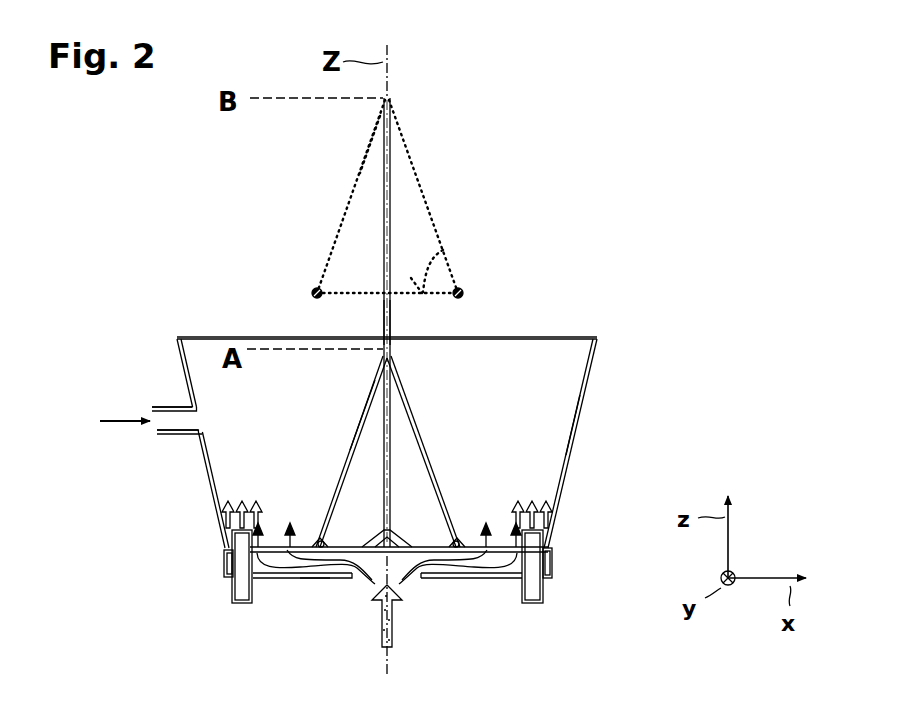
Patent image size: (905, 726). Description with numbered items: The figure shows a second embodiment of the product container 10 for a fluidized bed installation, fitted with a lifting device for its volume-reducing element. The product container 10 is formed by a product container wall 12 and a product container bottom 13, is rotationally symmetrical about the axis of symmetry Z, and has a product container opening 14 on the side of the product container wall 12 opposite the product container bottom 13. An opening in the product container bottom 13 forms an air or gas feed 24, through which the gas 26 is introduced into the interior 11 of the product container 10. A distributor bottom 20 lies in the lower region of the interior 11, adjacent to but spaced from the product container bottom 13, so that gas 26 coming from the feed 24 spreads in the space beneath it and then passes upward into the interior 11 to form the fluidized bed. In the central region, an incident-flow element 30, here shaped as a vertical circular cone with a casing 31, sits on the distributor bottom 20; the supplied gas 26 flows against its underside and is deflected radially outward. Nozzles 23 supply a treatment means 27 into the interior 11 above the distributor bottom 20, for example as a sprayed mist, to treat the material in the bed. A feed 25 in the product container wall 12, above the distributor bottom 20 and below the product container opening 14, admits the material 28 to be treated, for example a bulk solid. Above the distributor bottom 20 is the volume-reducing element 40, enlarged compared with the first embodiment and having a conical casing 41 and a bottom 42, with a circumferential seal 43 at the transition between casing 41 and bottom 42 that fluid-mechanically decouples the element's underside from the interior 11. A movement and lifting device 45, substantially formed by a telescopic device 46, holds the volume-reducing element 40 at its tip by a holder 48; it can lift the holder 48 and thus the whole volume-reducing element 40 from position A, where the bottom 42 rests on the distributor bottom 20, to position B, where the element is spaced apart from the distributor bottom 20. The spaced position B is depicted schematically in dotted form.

The product container 10 is at (624, 184).
The interior 11 is at (560, 390).
The product container wall 12 is at (572, 455).
The product container bottom 13 is at (468, 584).
The product container opening 14 is at (205, 337).
The distributor bottom 20 is at (503, 578).
The nozzles 23 is at (237, 590).
The air or gas feed 24 is at (391, 612).
The feed 25 is at (172, 406).
The gas 26 is at (327, 572).
The treatment means 27 is at (228, 513).
The material 28 is at (117, 414).
The incident-flow element 30 is at (398, 522).
The casing 31 is at (393, 545).
The volume-reducing element 40 is at (418, 161).
The casing 41 is at (428, 200).
The bottom 42 is at (443, 250).
The seal 43 is at (311, 290).
The movement and lifting device 45 is at (399, 324).
The telescopic device 46 is at (383, 322).
The holder 48 is at (396, 100).